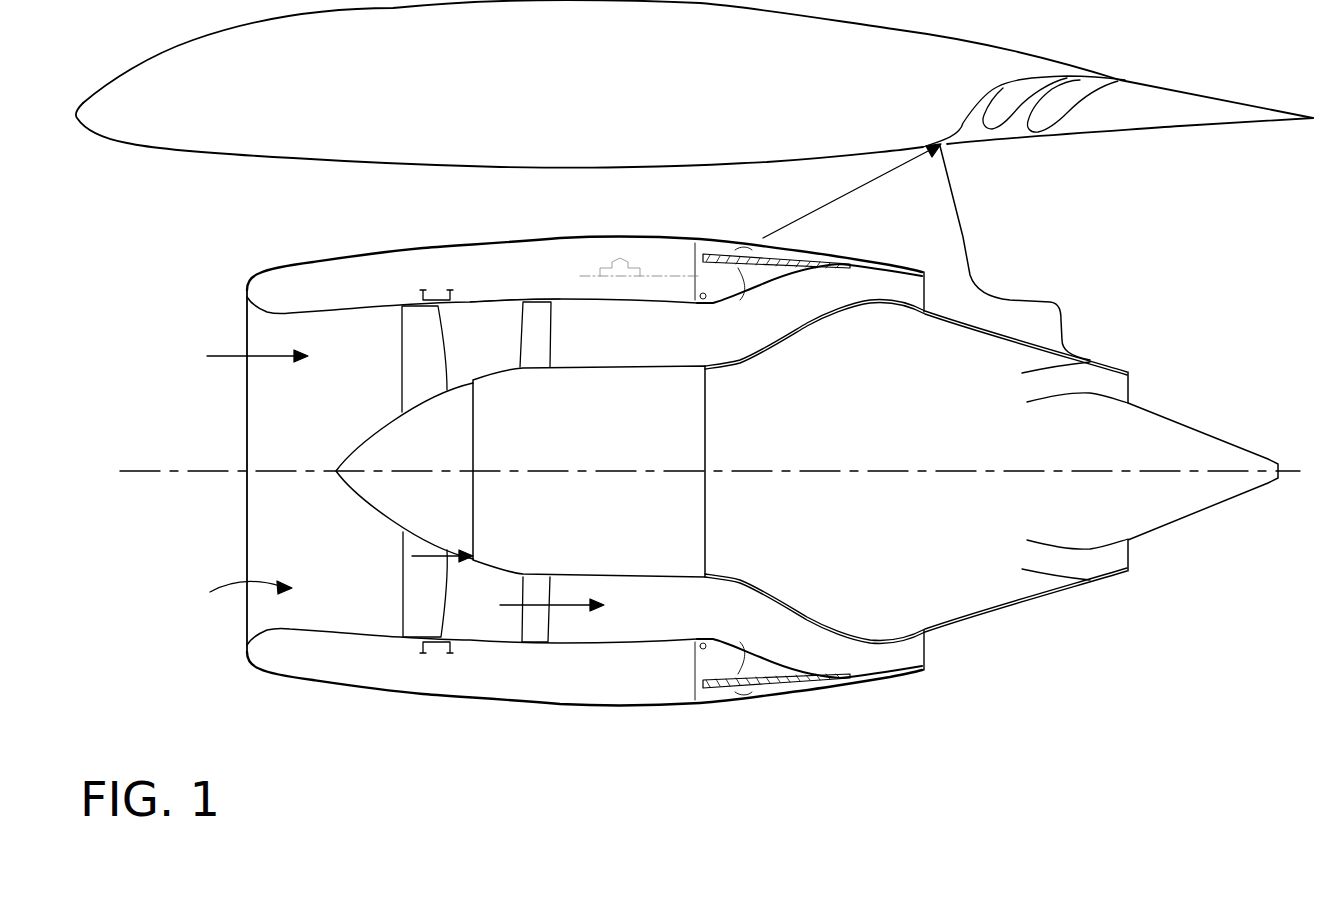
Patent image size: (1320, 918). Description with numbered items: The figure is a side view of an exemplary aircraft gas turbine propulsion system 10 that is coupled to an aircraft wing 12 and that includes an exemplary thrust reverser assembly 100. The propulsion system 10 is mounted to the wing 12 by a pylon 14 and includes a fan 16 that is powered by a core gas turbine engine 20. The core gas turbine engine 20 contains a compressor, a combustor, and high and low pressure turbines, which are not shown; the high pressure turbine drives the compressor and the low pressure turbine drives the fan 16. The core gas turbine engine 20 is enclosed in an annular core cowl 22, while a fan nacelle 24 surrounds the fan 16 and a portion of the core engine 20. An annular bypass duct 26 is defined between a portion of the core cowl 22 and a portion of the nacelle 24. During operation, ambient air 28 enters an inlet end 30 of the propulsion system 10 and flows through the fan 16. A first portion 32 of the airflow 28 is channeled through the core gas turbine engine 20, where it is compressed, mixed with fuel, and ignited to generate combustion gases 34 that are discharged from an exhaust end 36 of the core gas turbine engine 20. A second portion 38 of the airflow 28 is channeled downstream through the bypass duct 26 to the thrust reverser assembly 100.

The aircraft gas turbine propulsion system 10 is at (756, 454).
The aircraft wing 12 is at (1174, 88).
The pylon 14 is at (967, 236).
The fan 16 is at (410, 387).
The core gas turbine engine 20 is at (520, 471).
The annular core cowl 22 is at (504, 367).
The fan nacelle 24 is at (345, 256).
The annular bypass duct 26 is at (515, 315).
The ambient air 28 is at (227, 355).
The inlet end 30 is at (234, 591).
The first portion of airflow 32 is at (430, 557).
The combustion gases 34 is at (1117, 383).
The exhaust end 36 is at (1120, 578).
The second portion of airflow 38 is at (557, 603).
The thrust reverser assembly 100 is at (795, 704).